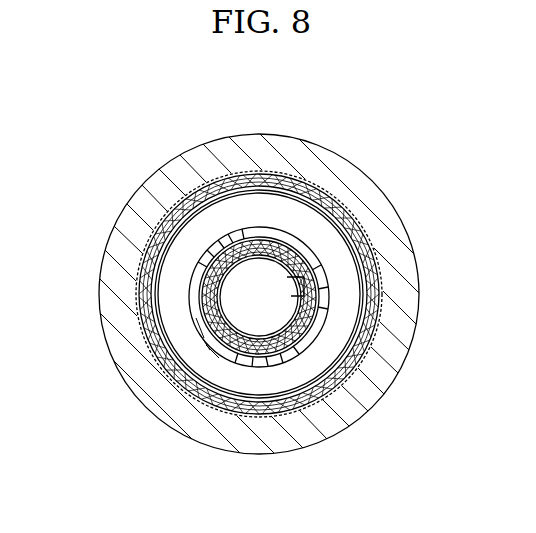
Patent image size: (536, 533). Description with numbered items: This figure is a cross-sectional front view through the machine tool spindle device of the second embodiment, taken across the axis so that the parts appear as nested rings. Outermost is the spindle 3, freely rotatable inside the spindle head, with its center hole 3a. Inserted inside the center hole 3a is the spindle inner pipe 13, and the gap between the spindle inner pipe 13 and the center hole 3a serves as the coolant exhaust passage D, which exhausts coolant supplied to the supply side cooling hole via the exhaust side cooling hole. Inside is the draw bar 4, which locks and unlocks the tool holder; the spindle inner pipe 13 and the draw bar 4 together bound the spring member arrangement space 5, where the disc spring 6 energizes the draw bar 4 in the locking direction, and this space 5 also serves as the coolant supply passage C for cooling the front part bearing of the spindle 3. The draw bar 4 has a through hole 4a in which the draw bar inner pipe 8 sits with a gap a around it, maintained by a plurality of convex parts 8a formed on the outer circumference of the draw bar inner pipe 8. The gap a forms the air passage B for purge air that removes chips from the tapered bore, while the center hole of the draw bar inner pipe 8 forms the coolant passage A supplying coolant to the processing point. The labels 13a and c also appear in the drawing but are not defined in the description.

The spindle 3 is at (313, 170).
The center hole 3a is at (293, 187).
The draw bar inner pipe 8 is at (242, 228).
The convex parts 8a is at (323, 220).
The spindle inner pipe 13 is at (214, 198).
The outer sheath layer 13a is at (120, 292).
The disc spring 6 is at (207, 220).
The spring member arrangement space 5 is at (347, 210).
The draw bar 4 is at (315, 260).
The through hole 4a is at (313, 280).
The coolant passage A is at (153, 233).
The air passage B is at (140, 270).
The coolant supply passage C is at (133, 313).
The coolant exhaust passage D is at (130, 346).
The gap a is at (357, 333).
The dimension c is at (372, 404).